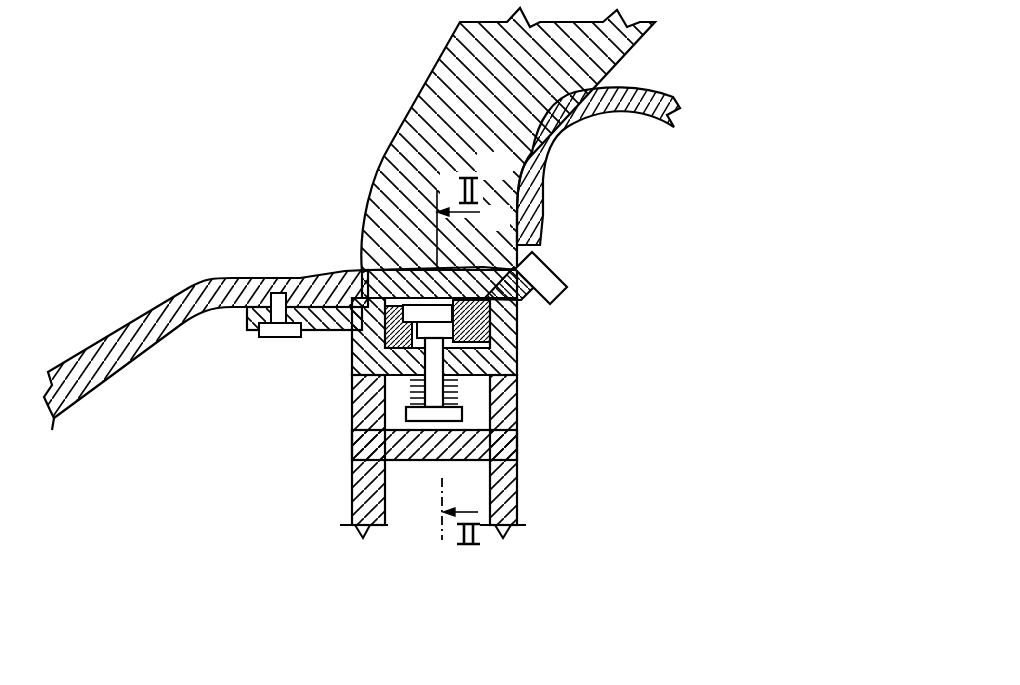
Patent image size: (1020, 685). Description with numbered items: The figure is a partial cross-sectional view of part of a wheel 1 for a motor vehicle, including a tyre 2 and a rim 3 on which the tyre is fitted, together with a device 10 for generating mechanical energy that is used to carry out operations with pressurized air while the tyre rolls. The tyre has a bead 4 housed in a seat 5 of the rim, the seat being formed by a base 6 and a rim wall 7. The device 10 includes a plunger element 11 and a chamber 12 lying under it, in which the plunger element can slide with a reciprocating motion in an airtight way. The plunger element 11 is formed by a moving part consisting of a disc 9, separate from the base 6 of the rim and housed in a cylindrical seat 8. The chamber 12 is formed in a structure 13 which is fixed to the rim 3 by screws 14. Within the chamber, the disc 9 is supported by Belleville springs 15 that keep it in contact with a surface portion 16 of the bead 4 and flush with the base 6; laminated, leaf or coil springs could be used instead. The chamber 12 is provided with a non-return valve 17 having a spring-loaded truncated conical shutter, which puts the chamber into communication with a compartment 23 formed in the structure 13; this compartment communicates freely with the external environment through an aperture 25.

The wheel 1 is at (663, 73).
The tyre 2 is at (650, 38).
The rim 3 is at (235, 266).
The bead 4 is at (390, 130).
The seat 5 is at (548, 198).
The base 6 is at (366, 232).
The rim wall 7 is at (568, 142).
The cylindrical seat 8 is at (362, 274).
The disc 9 is at (465, 260).
The device for generating energy 10 is at (405, 250).
The plunger element 11 is at (462, 245).
The chamber 12 is at (343, 332).
The structure 13 is at (352, 380).
The screws 14 is at (260, 337).
The Belleville springs 15 is at (522, 348).
The surface portion 16 is at (440, 148).
The non-return valve 17 is at (483, 374).
The compartment 23 is at (352, 448).
The aperture 25 is at (500, 418).